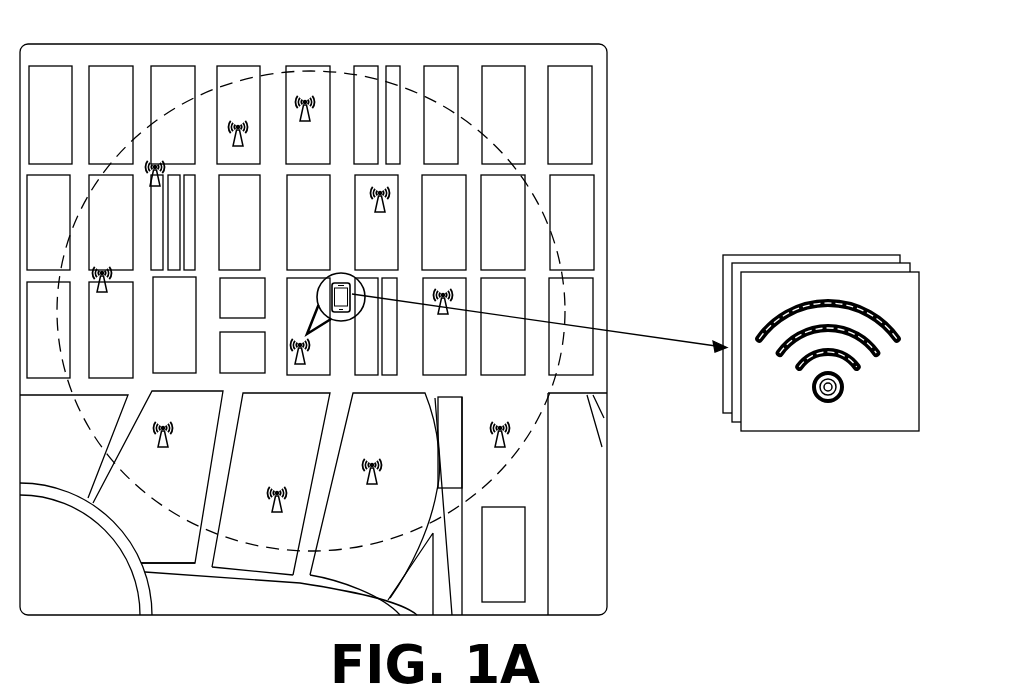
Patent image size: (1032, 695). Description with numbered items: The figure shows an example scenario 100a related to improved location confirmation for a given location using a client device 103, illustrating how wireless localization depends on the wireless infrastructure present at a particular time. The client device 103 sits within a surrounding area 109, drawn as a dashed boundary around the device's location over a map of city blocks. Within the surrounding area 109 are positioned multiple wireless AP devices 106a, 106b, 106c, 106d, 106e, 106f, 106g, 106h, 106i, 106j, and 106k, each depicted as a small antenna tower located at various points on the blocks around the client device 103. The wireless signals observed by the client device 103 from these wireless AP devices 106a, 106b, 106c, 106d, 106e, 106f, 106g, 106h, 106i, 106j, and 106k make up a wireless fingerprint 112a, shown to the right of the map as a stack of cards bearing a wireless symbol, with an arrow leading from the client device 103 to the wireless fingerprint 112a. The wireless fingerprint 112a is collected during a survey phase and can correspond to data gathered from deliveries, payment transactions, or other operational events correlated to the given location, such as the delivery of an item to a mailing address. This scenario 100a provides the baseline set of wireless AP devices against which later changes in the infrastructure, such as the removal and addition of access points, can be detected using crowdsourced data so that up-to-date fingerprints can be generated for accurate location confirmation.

The example scenario 100a is at (689, 549).
The client device 103 is at (344, 274).
The wireless AP device 106a is at (108, 287).
The wireless AP device 106b is at (161, 180).
The wireless AP device 106c is at (244, 140).
The wireless AP device 106d is at (311, 115).
The wireless AP device 106e is at (386, 206).
The wireless AP device 106f is at (449, 308).
The wireless AP device 106g is at (506, 441).
The wireless AP device 106h is at (378, 478).
The wireless AP device 106i is at (283, 506).
The wireless AP device 106j is at (306, 358).
The wireless AP device 106k is at (169, 441).
The surrounding area 109 is at (280, 72).
The wireless fingerprint 112a is at (835, 420).